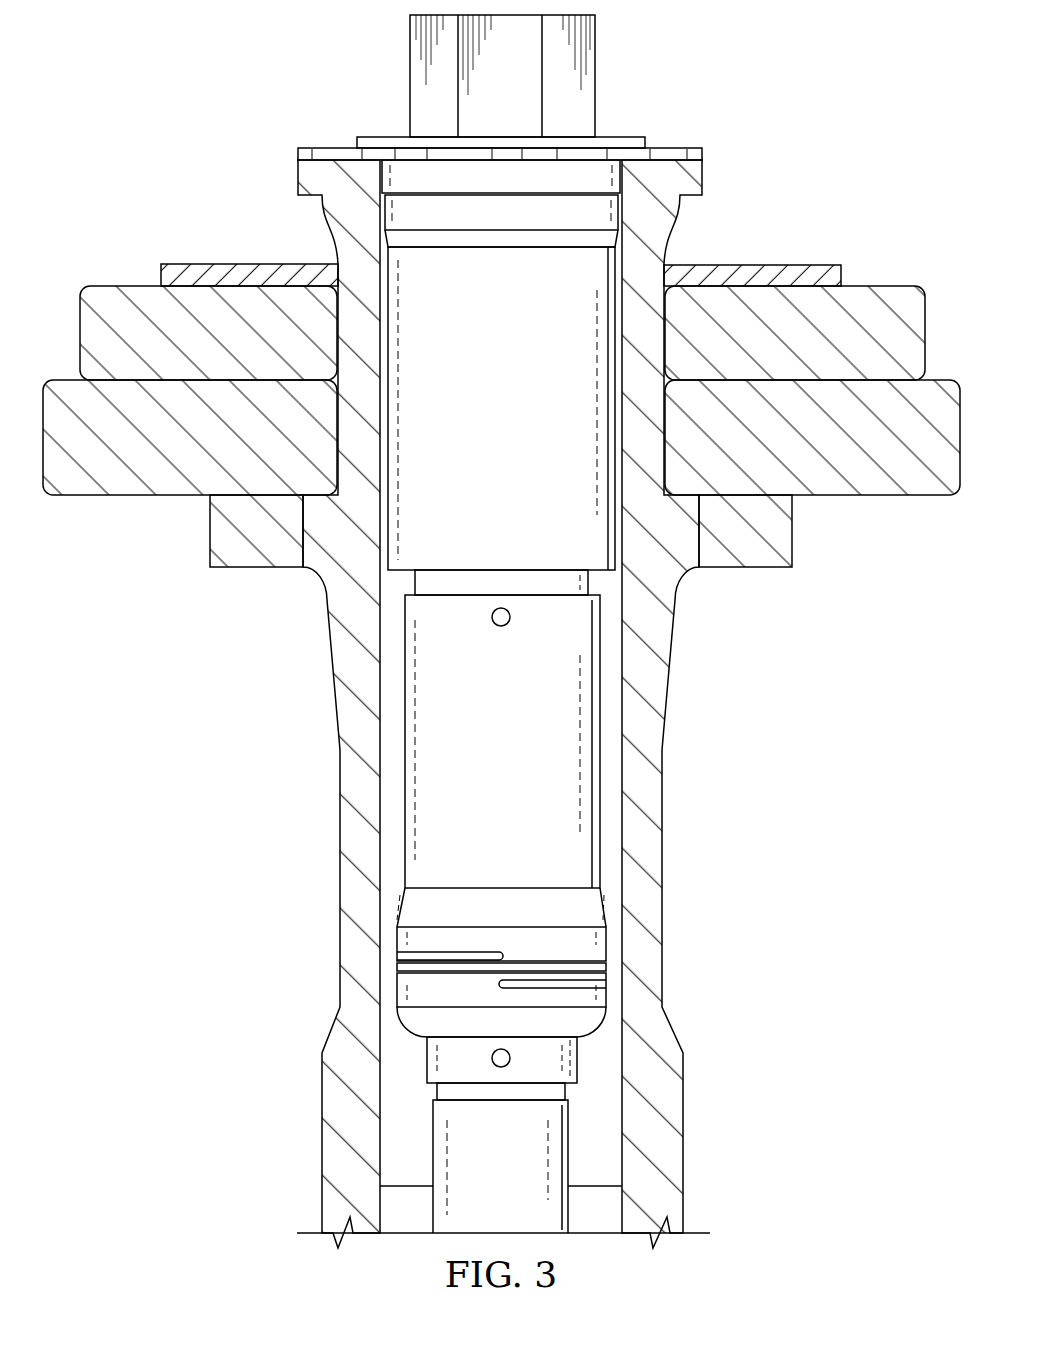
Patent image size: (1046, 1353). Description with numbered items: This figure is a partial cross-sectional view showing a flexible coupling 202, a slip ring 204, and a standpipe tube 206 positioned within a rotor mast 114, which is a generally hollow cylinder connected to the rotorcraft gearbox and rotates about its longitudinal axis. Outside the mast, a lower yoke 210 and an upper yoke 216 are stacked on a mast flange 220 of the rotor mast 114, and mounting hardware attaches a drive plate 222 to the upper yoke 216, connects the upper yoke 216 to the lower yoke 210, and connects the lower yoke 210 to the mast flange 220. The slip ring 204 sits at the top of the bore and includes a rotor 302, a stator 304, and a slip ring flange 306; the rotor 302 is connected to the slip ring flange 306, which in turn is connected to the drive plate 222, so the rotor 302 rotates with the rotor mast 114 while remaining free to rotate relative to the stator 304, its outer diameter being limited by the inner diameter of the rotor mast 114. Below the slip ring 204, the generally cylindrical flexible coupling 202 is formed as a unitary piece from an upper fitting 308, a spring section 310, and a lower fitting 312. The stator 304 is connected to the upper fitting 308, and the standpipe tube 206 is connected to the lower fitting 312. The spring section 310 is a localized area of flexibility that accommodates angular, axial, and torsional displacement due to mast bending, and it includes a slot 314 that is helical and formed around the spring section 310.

The rotor mast 114 is at (654, 873).
The flexible coupling 202 is at (438, 829).
The slip ring 204 is at (420, 290).
The standpipe tube 206 is at (548, 1147).
The lower yoke 210 is at (850, 483).
The upper yoke 216 is at (858, 292).
The mast flange 220 is at (745, 557).
The drive plate 222 is at (804, 270).
The rotor 302 is at (596, 272).
The stator 304 is at (465, 585).
The slip ring flange 306 is at (668, 146).
The upper fitting 308 is at (438, 642).
The spring section 310 is at (405, 945).
The lower fitting 312 is at (438, 1055).
The slot 314 is at (596, 950).